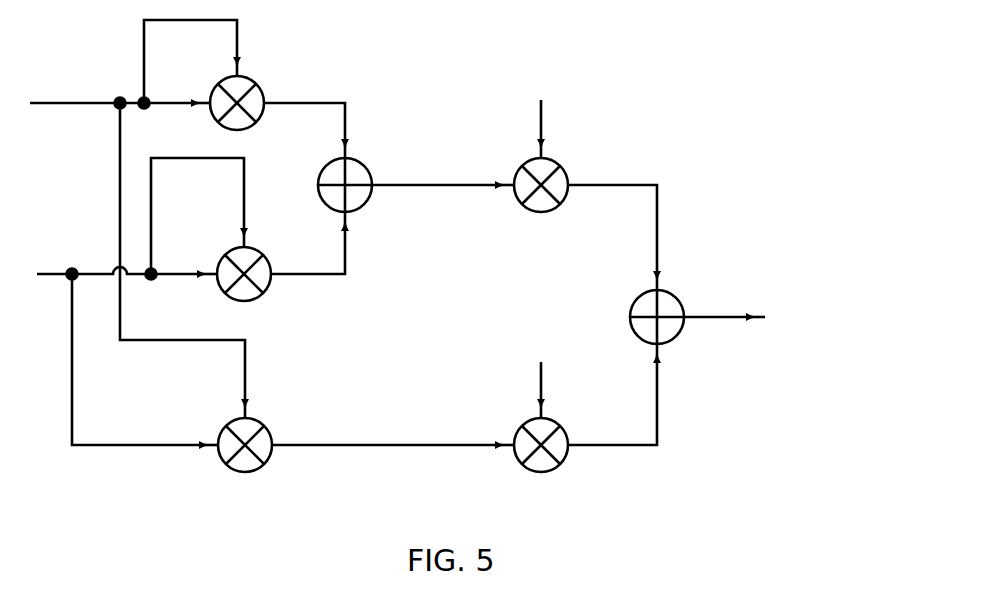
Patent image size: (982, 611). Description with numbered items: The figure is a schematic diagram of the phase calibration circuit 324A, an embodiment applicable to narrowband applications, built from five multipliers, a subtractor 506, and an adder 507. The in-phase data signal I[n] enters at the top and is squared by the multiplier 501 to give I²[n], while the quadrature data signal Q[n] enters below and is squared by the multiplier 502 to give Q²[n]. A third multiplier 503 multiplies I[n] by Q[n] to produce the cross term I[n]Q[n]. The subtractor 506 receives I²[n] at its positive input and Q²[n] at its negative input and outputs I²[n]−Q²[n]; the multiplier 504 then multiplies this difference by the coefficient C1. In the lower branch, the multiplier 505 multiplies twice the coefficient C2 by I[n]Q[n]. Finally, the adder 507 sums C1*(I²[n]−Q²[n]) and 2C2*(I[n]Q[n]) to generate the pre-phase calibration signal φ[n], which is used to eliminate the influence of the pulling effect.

The phase calibration circuit 324A is at (458, 24).
The multiplier 501 is at (218, 122).
The multiplier 502 is at (264, 294).
The multiplier 503 is at (264, 425).
The multiplier 504 is at (532, 211).
The multiplier 505 is at (533, 471).
The subtractor 506 is at (323, 169).
The adder 507 is at (633, 304).